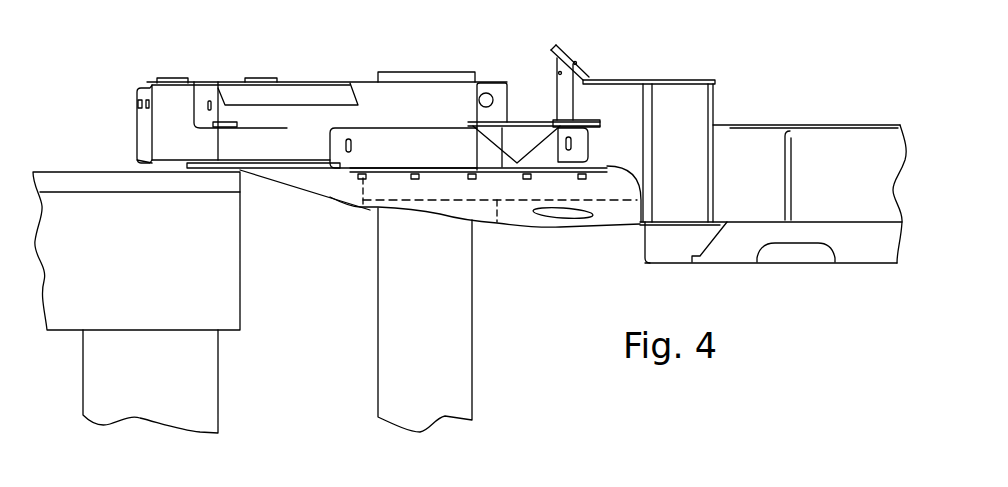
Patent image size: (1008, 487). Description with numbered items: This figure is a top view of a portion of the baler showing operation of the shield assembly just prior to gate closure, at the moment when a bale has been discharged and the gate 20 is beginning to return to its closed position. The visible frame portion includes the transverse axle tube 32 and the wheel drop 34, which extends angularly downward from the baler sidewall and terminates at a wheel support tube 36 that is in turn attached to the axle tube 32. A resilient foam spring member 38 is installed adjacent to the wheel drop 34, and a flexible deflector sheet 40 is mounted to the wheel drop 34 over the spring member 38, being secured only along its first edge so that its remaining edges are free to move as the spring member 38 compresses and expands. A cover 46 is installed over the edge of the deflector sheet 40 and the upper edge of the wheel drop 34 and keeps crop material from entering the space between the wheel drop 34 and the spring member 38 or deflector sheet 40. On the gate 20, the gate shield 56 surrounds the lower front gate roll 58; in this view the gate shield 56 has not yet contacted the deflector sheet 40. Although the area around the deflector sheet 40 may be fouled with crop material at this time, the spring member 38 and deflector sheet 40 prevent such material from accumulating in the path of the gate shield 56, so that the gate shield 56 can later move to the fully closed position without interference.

The gate 20 is at (168, 293).
The axle tube 32 is at (463, 332).
The wheel drop 34 is at (300, 142).
The wheel support tube 36 is at (163, 122).
The resilient foam spring member 38 is at (497, 207).
The flexible deflector sheet 40 is at (313, 187).
The cover 46 is at (433, 142).
The gate shield 56 is at (70, 206).
The lower front gate roll 58 is at (210, 383).